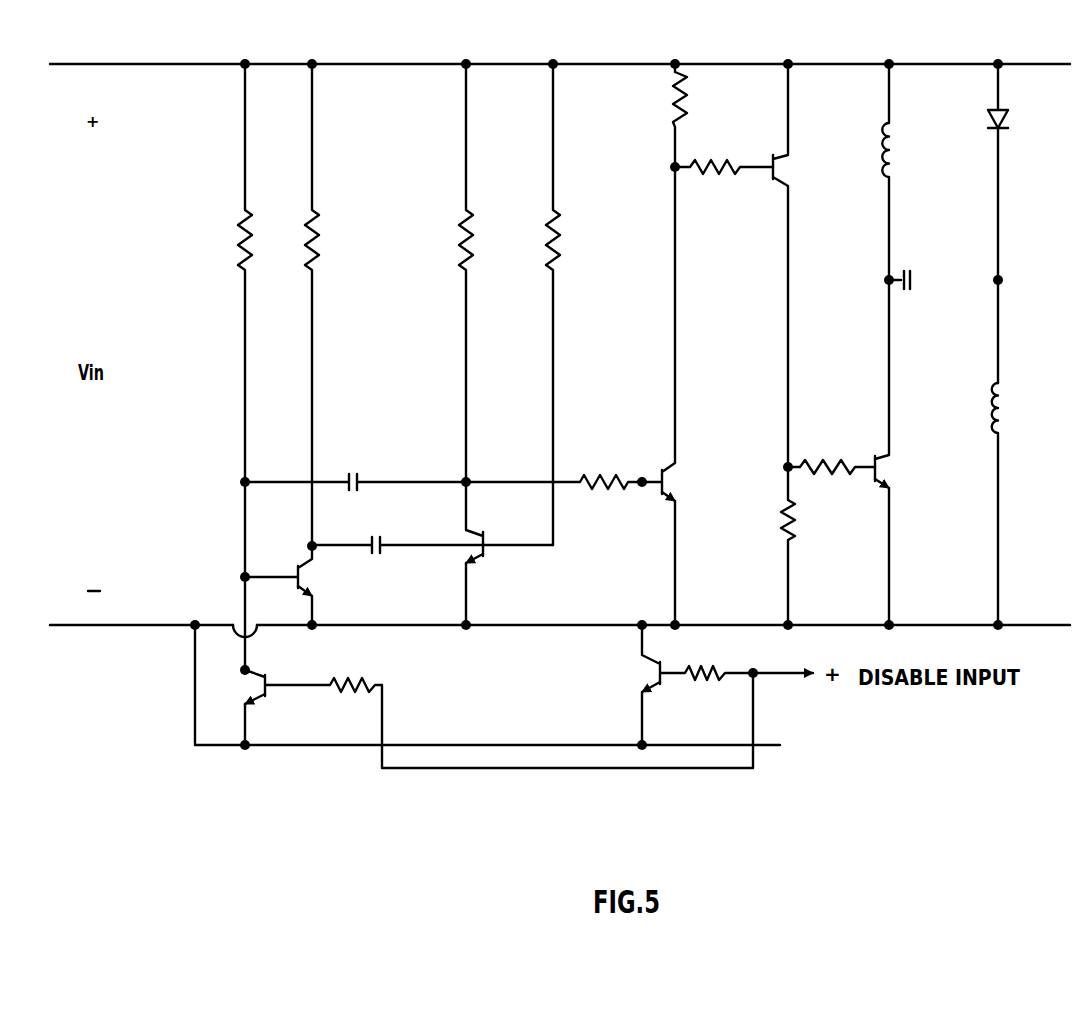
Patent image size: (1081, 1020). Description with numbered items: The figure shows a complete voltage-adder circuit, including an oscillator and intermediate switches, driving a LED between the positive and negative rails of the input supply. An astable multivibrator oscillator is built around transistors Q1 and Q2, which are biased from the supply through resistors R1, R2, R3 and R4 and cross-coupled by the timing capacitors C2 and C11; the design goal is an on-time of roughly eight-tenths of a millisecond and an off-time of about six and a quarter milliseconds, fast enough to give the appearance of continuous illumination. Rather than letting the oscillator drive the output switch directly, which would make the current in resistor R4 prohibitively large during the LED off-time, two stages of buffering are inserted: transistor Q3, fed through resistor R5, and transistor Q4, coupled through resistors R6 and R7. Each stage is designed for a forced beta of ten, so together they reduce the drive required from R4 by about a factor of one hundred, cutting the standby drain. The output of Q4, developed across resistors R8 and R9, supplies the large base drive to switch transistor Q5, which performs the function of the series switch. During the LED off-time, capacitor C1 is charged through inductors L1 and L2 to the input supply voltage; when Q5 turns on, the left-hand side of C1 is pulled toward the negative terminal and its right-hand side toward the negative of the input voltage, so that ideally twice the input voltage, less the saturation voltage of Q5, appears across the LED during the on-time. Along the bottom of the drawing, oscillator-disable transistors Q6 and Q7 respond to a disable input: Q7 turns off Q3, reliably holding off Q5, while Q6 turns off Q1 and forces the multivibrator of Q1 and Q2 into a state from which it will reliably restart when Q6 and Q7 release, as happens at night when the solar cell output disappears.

The resistor R1 130k R1 is at (219, 367).
The resistor R2 27k R2 is at (336, 305).
The resistor R3 13k R3 is at (578, 304).
The resistor R4 is at (444, 273).
The resistor R5 10k R5 is at (554, 444).
The resistor R6 10k R6 is at (658, 115).
The resistor R7 910 R7 is at (724, 196).
The resistor R8 2k R8 is at (775, 546).
The resistor R9 68k R9 is at (831, 436).
The transistor Q1 is at (300, 585).
The transistor Q2 is at (458, 553).
The transistor Q3 is at (678, 396).
The transistor Q4 is at (799, 265).
The switch transistor Q5 is at (900, 452).
The oscillator-disable transistor Q6 is at (482, 719).
The oscillator-disable transistor Q7 is at (681, 685).
The capacitor C1 is at (907, 263).
The capacitor C2 47nF C2 is at (355, 462).
The capacitor C11 68nF C11 is at (432, 529).
The inductor L1 is at (901, 172).
The inductor L2 is at (974, 504).
The element LED is at (1024, 223).